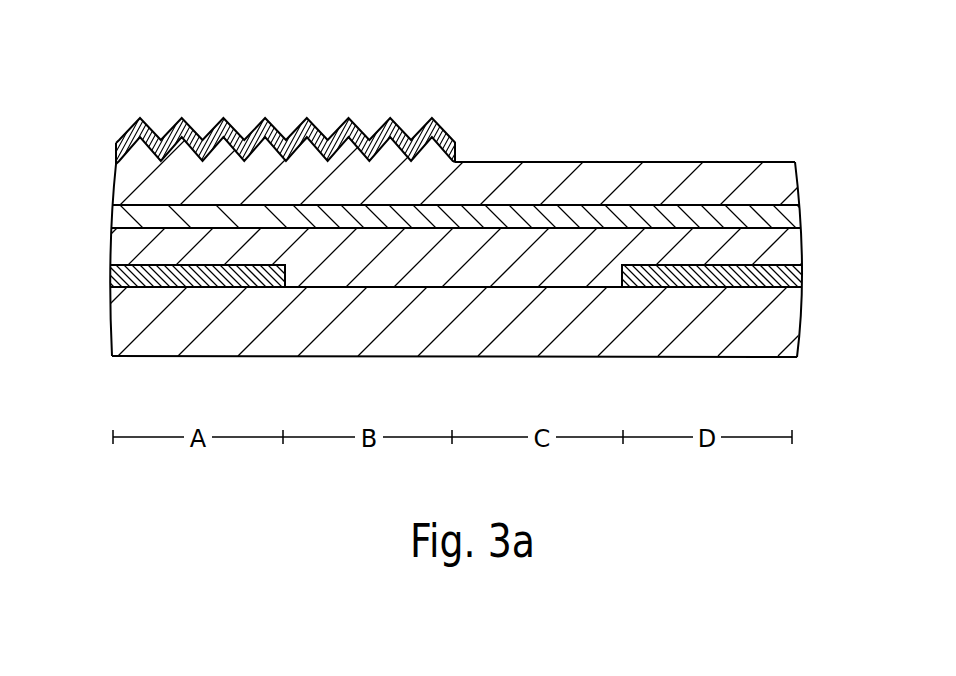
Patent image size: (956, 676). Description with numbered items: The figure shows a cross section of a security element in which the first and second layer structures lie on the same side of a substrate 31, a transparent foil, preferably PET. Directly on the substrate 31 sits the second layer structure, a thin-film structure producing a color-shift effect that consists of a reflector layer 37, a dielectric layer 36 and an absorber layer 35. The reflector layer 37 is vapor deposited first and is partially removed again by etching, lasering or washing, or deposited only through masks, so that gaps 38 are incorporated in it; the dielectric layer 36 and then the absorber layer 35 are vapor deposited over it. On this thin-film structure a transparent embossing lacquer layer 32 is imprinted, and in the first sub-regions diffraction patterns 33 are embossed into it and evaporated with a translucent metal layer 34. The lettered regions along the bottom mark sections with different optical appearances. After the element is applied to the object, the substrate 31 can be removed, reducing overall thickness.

The substrate 31 is at (780, 332).
The embossing lacquer layer 32 is at (782, 178).
The diffraction patterns 33 is at (148, 162).
The translucent metal layer 34 is at (228, 157).
The absorber layer 35 is at (780, 218).
The dielectric layer 36 is at (780, 248).
The reflector layer 37 is at (130, 275).
The gaps 38 is at (473, 273).